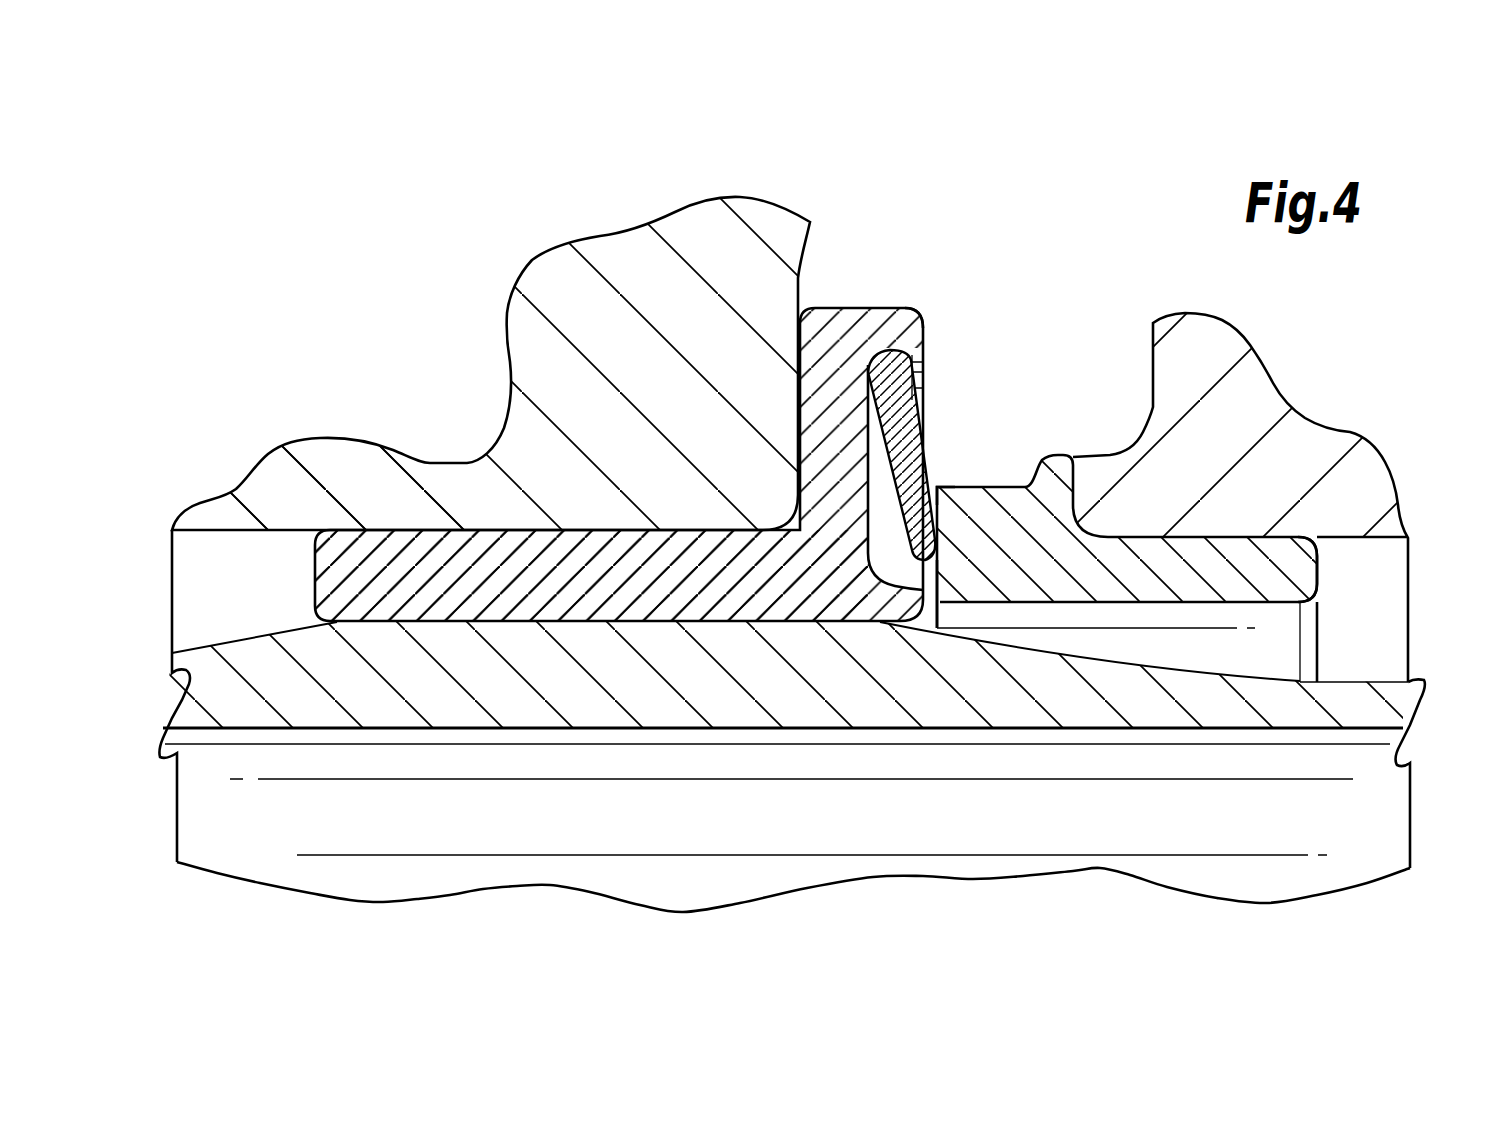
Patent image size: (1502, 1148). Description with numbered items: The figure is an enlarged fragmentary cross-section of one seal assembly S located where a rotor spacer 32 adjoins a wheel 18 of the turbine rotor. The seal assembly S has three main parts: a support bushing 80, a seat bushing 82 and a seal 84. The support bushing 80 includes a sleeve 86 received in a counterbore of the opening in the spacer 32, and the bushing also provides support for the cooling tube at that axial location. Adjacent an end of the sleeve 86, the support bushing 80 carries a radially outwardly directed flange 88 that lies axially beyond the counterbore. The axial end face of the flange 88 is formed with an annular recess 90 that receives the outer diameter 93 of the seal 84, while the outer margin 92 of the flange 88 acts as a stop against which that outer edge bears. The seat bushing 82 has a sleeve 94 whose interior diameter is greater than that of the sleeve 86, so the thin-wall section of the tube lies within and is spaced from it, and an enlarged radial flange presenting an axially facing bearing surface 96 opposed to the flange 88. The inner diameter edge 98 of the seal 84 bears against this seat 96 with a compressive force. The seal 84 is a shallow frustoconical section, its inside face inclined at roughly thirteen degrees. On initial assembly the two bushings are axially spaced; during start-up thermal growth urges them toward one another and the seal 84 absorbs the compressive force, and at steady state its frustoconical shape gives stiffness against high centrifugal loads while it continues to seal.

The seal assembly S is at (526, 245).
The wheel 18 is at (1297, 457).
The spacer 32 is at (627, 265).
The support bushing 80 is at (457, 492).
The seat bushing 82 is at (1146, 537).
The seal 84 is at (895, 418).
The sleeve 86 is at (407, 555).
The flange 88 is at (820, 418).
The annular recess 90 is at (887, 478).
The outer margin 92 is at (903, 337).
The outer diameter 93 is at (923, 322).
The sleeve 94 is at (1257, 572).
The bearing surface 96 is at (940, 470).
The inner diameter edge 98 is at (928, 558).